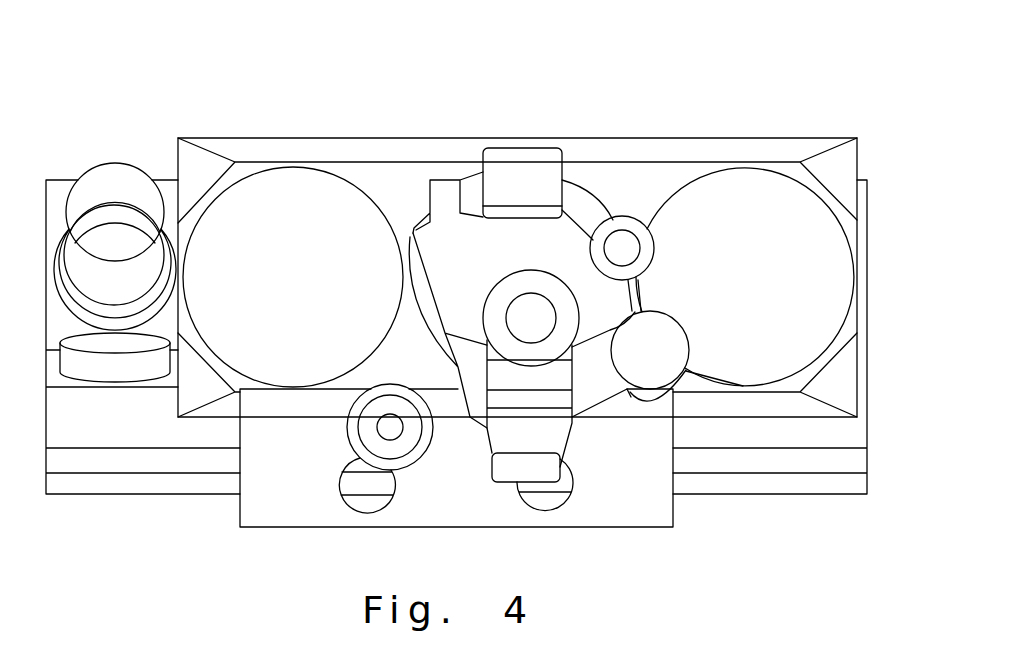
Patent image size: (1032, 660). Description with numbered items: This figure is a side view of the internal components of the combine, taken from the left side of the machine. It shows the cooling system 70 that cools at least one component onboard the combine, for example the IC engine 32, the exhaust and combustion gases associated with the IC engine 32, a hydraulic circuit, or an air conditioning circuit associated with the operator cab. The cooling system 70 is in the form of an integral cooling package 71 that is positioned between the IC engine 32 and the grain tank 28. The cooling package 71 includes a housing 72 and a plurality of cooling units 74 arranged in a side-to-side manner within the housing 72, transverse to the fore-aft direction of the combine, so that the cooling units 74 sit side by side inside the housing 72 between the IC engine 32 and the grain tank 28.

The grain tank 28 is at (130, 495).
The IC engine 32 is at (535, 147).
The cooling system 70 is at (478, 290).
The integral cooling package 71 is at (478, 290).
The housing 72 is at (373, 152).
The cooling units 74 is at (268, 228).